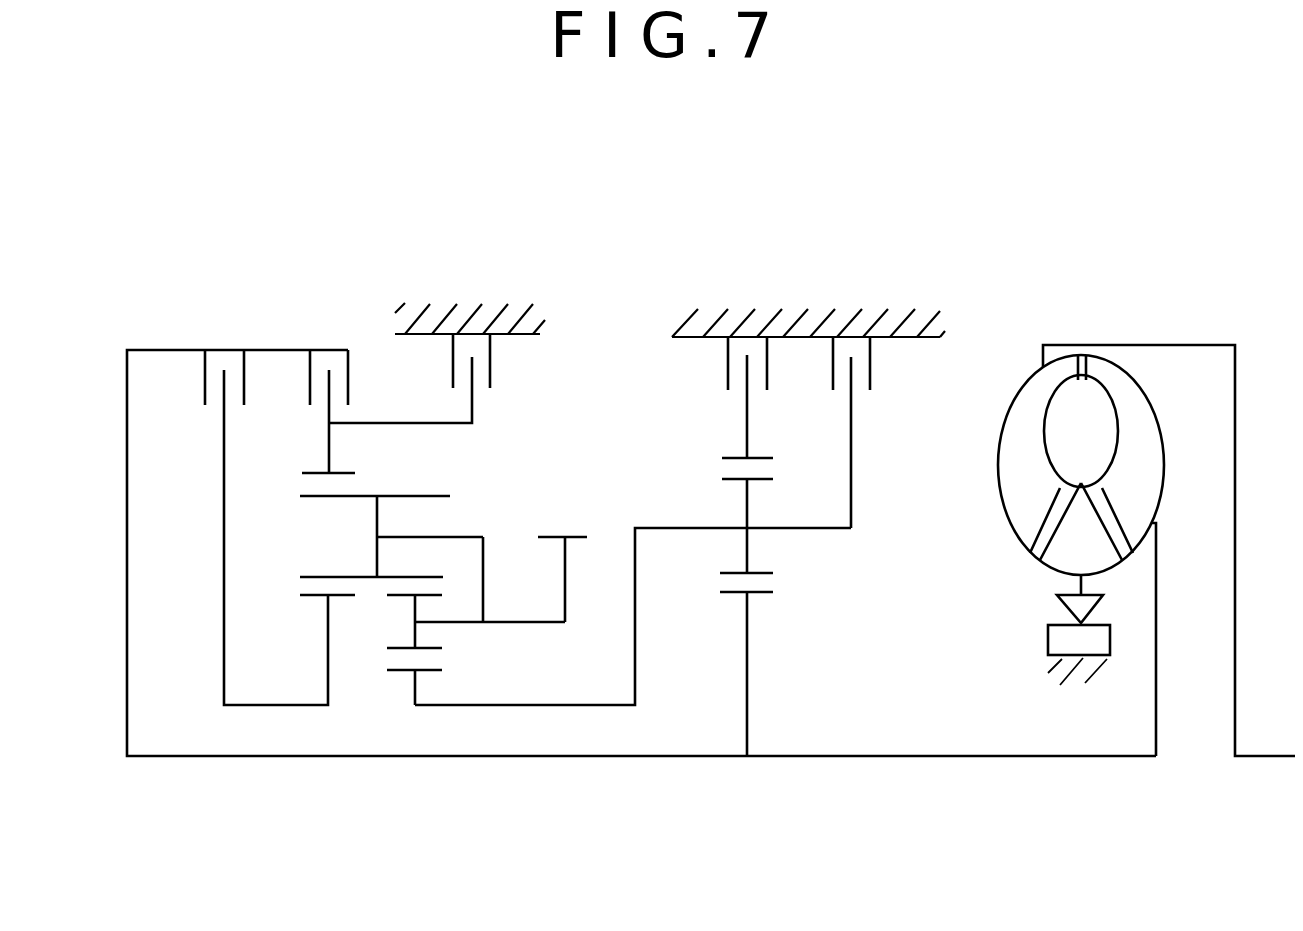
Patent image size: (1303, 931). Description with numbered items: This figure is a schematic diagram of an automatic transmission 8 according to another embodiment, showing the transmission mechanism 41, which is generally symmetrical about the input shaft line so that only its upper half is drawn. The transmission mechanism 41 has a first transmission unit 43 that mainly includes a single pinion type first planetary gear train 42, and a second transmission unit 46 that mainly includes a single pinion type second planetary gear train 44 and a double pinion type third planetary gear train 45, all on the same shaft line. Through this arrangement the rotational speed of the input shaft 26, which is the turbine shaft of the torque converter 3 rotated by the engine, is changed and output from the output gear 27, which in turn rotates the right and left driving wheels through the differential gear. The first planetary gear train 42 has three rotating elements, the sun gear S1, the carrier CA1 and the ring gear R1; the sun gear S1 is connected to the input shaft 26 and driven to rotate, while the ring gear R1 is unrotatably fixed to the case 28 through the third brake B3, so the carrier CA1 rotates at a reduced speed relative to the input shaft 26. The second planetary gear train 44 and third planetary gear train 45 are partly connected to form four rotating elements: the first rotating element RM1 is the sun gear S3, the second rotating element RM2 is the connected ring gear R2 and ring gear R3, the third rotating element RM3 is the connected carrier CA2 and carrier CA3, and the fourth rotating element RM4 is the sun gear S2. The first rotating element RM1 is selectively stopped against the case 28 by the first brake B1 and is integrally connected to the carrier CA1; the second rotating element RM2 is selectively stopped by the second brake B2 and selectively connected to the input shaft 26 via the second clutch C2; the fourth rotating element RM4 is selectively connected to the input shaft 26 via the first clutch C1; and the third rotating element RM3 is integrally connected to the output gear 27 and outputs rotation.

The torque converter 3 is at (1122, 263).
The automatic transmission 8 is at (938, 190).
The input shaft 26 is at (915, 757).
The output gear 27 is at (577, 535).
The case 28 is at (464, 318).
The transmission mechanism 41 is at (733, 210).
The first planetary gear train 42 is at (740, 772).
The first transmission unit 43 is at (655, 332).
The second planetary gear train 44 is at (302, 728).
The third planetary gear train 45 is at (423, 720).
The second transmission unit 46 is at (552, 298).
The first clutch C1 is at (223, 356).
The second clutch C2 is at (329, 356).
The first brake B1 is at (881, 363).
The second brake B2 is at (502, 361).
The third brake B3 is at (719, 363).
The ring gear R1 is at (752, 457).
The ring gear R2 is at (385, 464).
The ring gear R3 is at (330, 472).
The sun gear S1 is at (752, 595).
The sun gear S2 is at (333, 598).
The sun gear S3 is at (420, 672).
The carrier CA1 is at (852, 486).
The carrier CA2 is at (440, 537).
The carrier CA3 is at (427, 523).
The first rotating element RM1 is at (528, 706).
The second rotating element RM2 is at (470, 418).
The third rotating element RM3 is at (520, 623).
The fourth rotating element RM4 is at (275, 698).